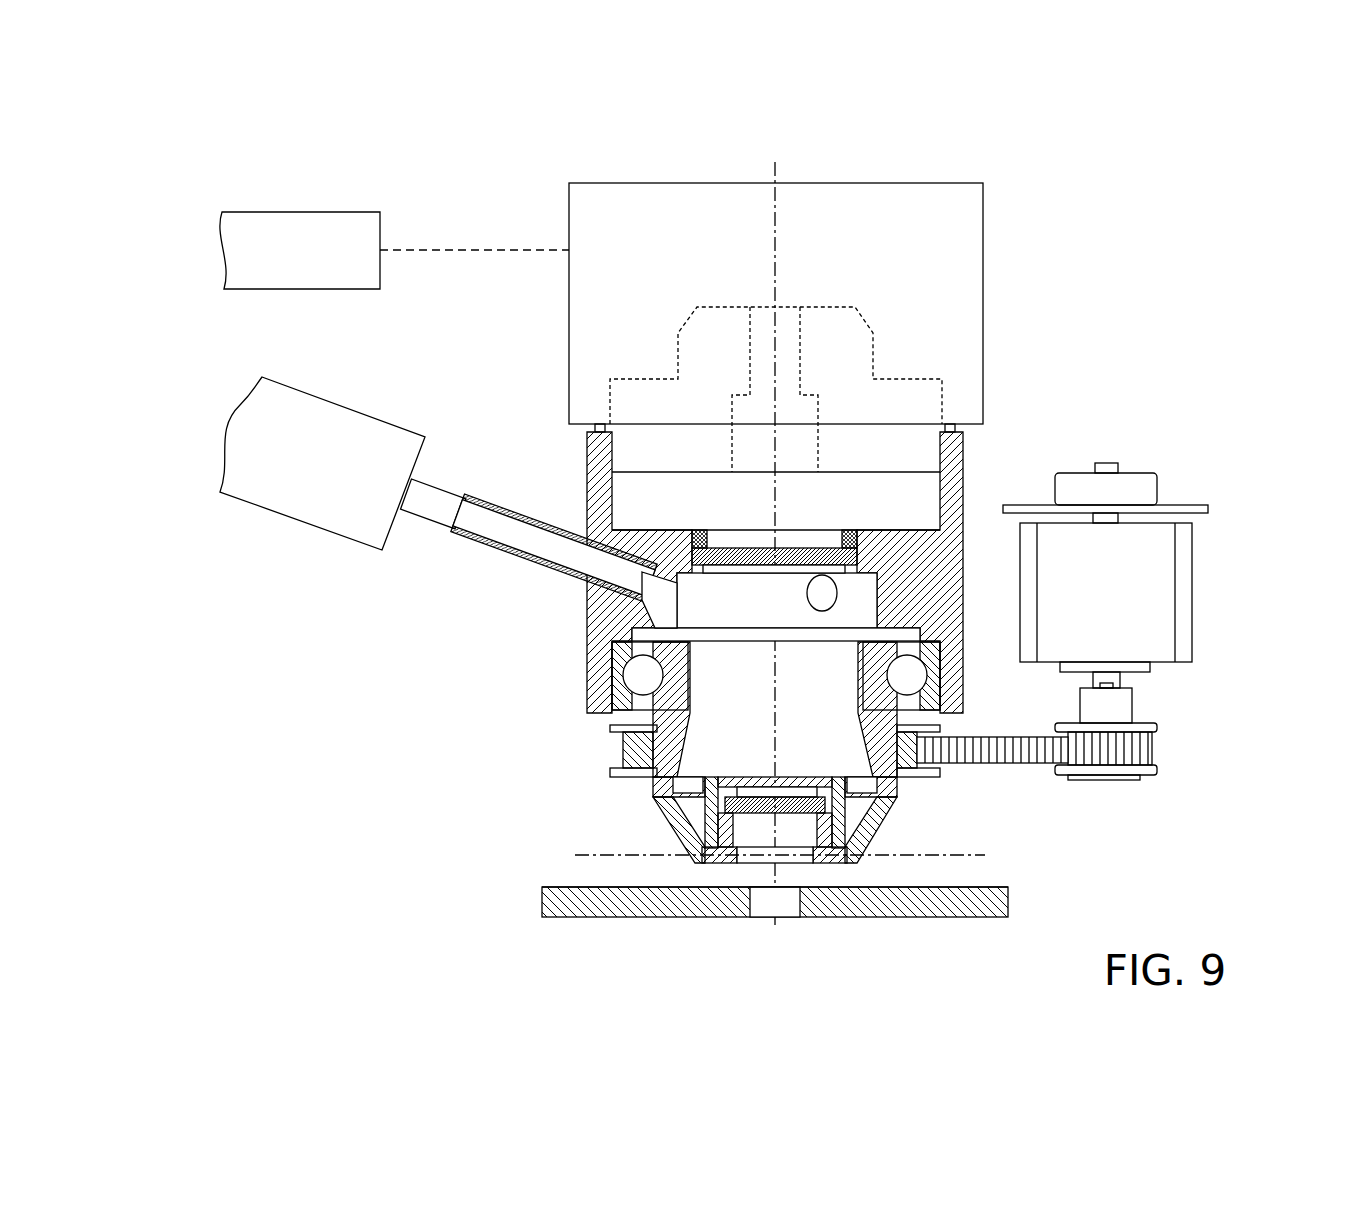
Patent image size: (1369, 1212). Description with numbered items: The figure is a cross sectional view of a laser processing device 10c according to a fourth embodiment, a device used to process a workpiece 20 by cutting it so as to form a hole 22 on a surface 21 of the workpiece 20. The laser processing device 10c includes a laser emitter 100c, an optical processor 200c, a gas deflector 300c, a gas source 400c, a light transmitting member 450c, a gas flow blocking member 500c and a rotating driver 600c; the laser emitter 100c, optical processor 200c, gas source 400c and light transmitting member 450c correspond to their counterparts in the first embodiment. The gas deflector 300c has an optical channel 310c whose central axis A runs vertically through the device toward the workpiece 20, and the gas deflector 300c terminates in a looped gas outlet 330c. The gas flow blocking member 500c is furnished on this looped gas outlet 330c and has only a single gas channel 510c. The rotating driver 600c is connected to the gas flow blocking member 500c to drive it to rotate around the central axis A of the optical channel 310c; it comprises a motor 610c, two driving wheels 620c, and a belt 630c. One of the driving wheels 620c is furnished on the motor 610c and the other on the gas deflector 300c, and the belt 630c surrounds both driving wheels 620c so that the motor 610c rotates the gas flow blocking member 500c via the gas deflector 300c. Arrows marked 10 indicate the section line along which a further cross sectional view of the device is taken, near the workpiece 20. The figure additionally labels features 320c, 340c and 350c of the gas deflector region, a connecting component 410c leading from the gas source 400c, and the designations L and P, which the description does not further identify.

The laser processing device 10c is at (147, 177).
The laser emitter 100c is at (288, 212).
The optical processor 200c is at (985, 306).
The gas deflector 300c is at (556, 675).
The optical channel 310c is at (733, 530).
The nozzle ring 320c is at (683, 862).
The looped gas outlet 330c is at (706, 864).
The lens 340c is at (690, 846).
The gas inlet 350c is at (650, 588).
The gas source 400c is at (333, 420).
The gas supply pipe 410c is at (448, 508).
The light transmitting member 450c is at (882, 822).
The gas flow blocking member 500c is at (857, 868).
The single gas channel 510c is at (827, 866).
The rotating driver 600c is at (1160, 593).
The motor 610c is at (1176, 594).
The driving wheels 620c is at (610, 775).
The belt 630c is at (1000, 742).
The section line 10 is at (578, 856).
The workpiece 20 is at (803, 909).
The surface 21 is at (988, 884).
The hole 22 is at (762, 900).
The laser beam L is at (483, 249).
The central axis A is at (775, 531).
The processing point P is at (797, 890).